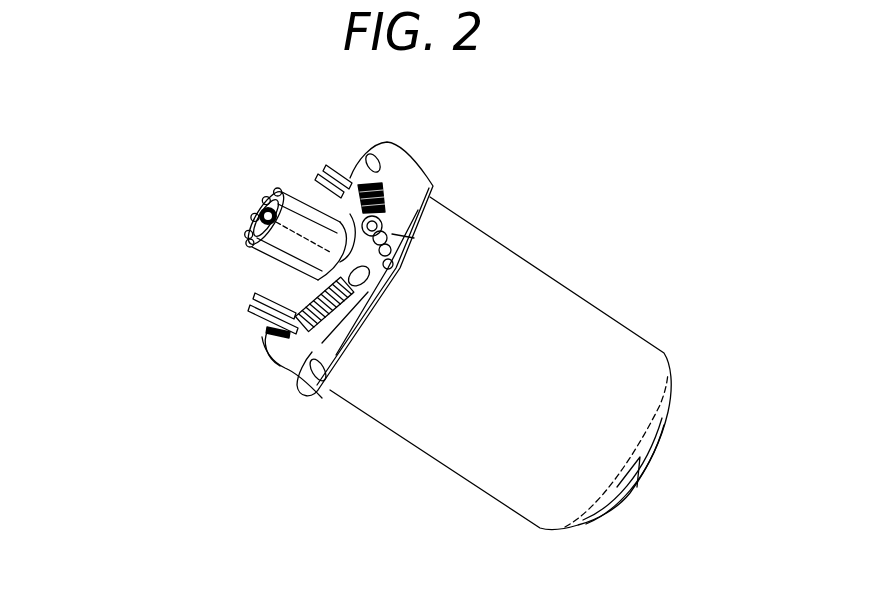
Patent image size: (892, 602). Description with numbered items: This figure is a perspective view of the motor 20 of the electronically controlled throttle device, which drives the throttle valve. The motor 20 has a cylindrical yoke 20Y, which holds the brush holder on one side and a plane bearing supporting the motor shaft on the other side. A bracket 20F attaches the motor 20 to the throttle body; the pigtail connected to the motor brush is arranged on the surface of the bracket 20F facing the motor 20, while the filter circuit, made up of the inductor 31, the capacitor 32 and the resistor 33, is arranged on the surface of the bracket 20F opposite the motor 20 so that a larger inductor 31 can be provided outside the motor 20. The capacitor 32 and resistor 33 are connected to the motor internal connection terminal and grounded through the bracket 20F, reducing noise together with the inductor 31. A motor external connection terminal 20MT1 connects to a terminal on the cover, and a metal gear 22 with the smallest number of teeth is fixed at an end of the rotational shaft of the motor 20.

The motor 20 is at (662, 150).
The cylindrical yoke 20Y is at (575, 350).
The bracket 20F is at (292, 369).
The gear 22 is at (250, 241).
The motor external connection terminal 20MT1 is at (330, 167).
The inductor 31 is at (420, 148).
The capacitor 32 is at (432, 199).
The resistor 33 is at (408, 254).